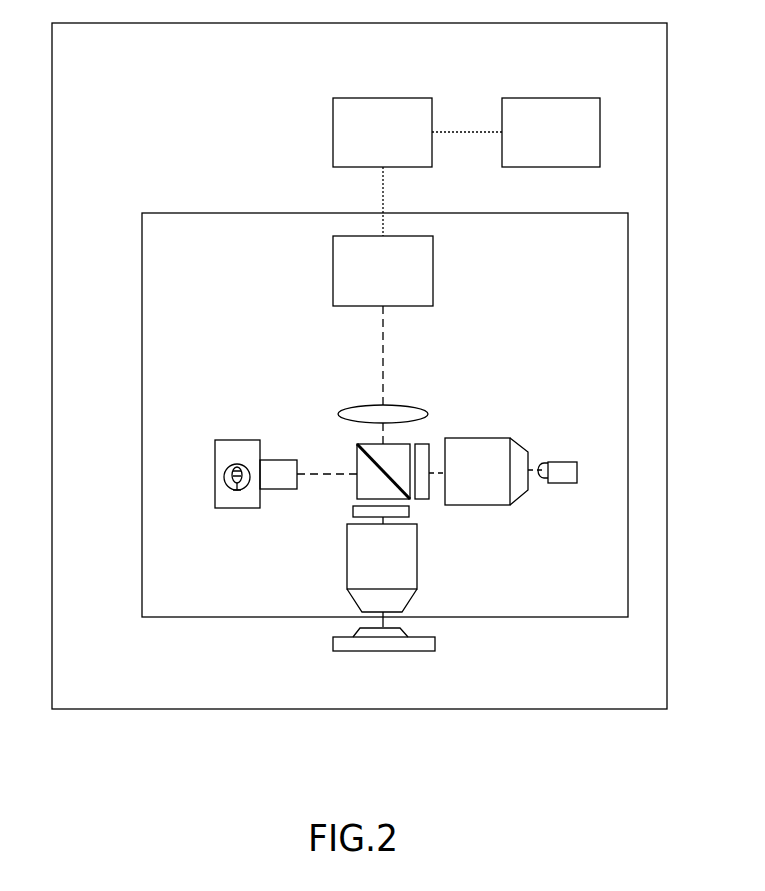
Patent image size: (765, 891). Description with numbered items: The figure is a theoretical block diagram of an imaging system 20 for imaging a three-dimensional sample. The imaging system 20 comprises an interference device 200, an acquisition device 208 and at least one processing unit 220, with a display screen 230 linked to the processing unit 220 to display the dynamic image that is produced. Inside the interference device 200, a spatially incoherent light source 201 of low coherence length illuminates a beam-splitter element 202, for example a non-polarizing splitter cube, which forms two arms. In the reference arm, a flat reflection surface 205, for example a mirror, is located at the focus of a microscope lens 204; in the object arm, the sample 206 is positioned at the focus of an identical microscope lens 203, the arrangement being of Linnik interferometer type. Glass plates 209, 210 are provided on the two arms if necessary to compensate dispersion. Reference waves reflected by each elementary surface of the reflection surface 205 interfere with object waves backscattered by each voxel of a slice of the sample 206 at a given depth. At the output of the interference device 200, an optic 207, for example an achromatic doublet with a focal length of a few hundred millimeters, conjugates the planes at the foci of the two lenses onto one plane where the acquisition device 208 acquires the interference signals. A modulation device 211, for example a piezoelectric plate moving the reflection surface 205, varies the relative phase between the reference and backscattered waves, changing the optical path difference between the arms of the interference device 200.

The imaging system 20 is at (138, 710).
The interference device 200 is at (141, 388).
The light source 201 is at (240, 440).
The beam-splitter element 202 is at (355, 457).
The microscope lens 203 is at (420, 567).
The microscope lens 204 is at (490, 505).
The reflection surface 205 is at (545, 480).
The sample 206 is at (362, 643).
The optic 207 is at (418, 408).
The acquisition device 208 is at (332, 272).
The glass plate 209 is at (353, 512).
The glass plate 210 is at (428, 444).
The modulation device 211 is at (565, 462).
The processing unit 220 is at (332, 140).
The display screen 230 is at (560, 97).